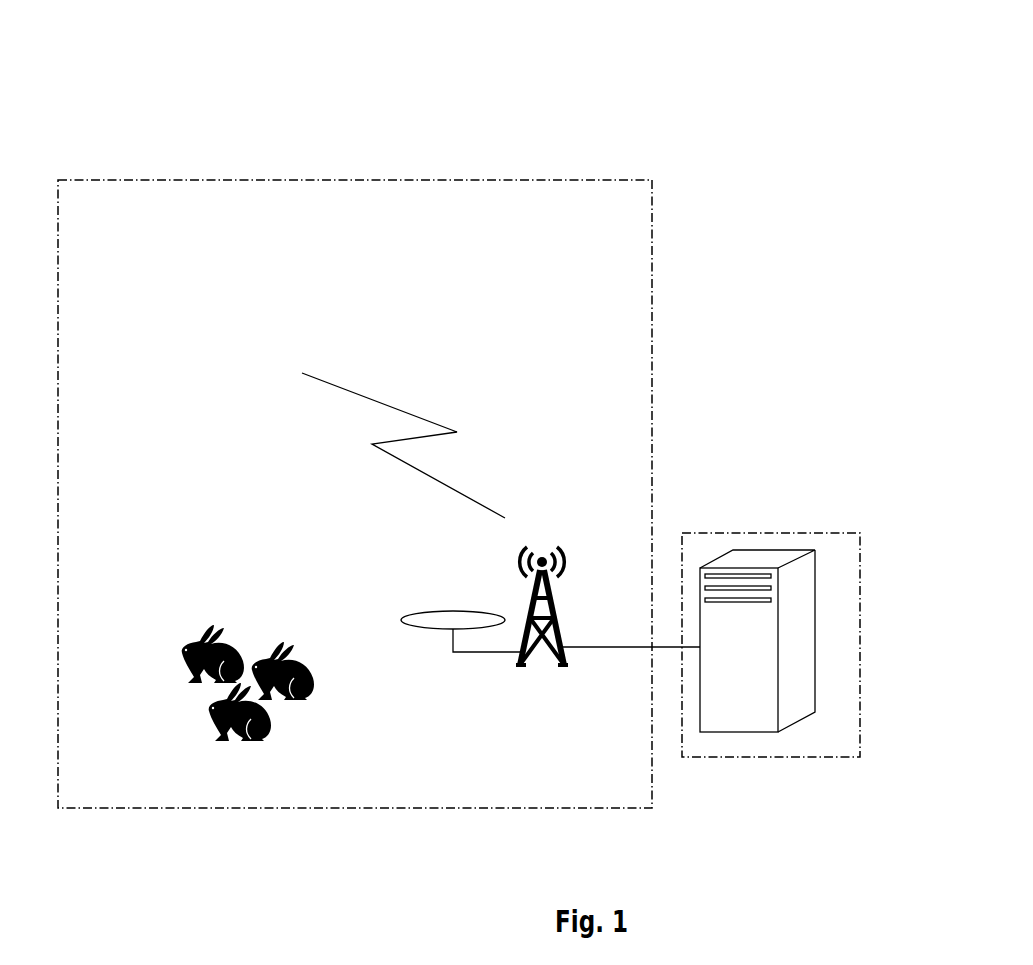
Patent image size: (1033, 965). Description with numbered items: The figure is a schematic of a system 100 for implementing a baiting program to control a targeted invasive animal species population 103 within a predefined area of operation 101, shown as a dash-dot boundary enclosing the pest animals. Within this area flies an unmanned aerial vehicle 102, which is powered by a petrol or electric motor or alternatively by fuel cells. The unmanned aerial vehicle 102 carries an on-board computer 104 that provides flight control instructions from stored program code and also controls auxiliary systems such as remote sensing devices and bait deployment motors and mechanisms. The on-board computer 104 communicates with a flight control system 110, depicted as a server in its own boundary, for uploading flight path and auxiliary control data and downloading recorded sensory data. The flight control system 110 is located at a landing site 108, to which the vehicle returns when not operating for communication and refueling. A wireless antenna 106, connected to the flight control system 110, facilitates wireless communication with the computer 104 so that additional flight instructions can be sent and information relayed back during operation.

The system 100 is at (652, 92).
The area of operation 101 is at (261, 171).
The unmanned aerial vehicle 102 is at (193, 248).
The targeted invasive animal species population 103 is at (251, 615).
The on-board computer 104 is at (275, 330).
The wireless antenna 106 is at (533, 520).
The landing site 108 is at (439, 600).
The flight control system 110 is at (820, 533).